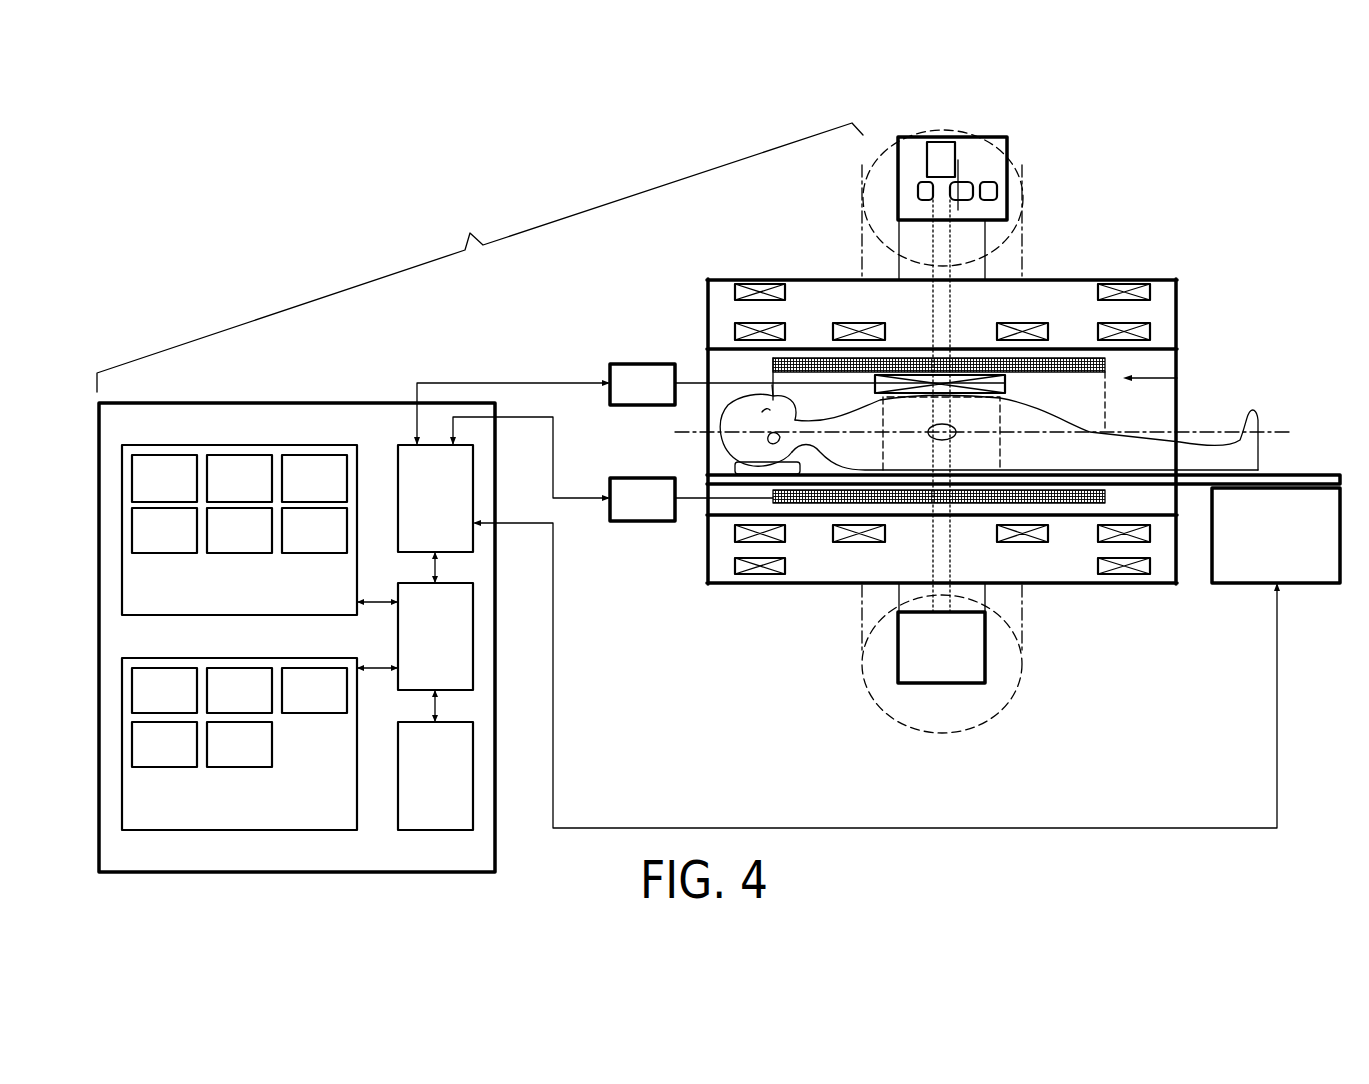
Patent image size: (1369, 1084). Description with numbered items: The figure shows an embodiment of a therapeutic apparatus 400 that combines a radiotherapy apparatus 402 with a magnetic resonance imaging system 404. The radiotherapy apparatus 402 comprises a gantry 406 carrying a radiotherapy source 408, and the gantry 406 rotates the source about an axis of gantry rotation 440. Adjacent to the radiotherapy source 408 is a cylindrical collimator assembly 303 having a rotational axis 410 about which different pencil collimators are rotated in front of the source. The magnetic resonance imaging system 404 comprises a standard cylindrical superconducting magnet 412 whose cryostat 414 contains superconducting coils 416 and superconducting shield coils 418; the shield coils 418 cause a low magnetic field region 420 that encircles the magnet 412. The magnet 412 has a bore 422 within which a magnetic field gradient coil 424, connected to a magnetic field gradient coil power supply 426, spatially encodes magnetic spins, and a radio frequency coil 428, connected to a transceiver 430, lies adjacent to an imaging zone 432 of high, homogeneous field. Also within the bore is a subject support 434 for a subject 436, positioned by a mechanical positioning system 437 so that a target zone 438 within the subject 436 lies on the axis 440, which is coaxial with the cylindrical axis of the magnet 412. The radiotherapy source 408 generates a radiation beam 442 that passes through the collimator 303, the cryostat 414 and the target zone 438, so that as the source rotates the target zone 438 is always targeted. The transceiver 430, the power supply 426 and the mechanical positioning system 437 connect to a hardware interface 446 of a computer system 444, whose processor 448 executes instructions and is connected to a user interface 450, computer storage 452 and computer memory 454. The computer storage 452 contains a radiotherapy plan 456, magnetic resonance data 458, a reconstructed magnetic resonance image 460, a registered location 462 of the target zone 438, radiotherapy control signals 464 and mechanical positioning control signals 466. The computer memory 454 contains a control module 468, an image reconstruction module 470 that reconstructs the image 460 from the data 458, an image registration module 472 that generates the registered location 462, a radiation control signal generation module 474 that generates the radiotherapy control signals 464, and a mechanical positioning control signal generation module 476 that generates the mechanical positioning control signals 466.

The cylindrical collimator assembly 303 is at (997, 190).
The therapeutic apparatus 400 is at (480, 257).
The radiotherapy apparatus 402 is at (850, 192).
The magnetic resonance imaging system 404 is at (706, 258).
The gantry 406 is at (987, 276).
The radiotherapy source 408 is at (927, 160).
The rotational axis of the collimator assembly 410 is at (958, 172).
The magnet 412 is at (1178, 315).
The cryostat 414 is at (1163, 297).
The superconducting coils 416 is at (735, 331).
The superconducting shield coils 418 is at (735, 290).
The low magnetic field region 420 is at (1022, 198).
The bore 422 is at (1177, 380).
The magnetic field gradient coil 424 is at (773, 360).
The magnetic field gradient coil power supply 426 is at (663, 515).
The radio frequency coil 428 is at (1006, 385).
The transceiver 430 is at (663, 400).
The imaging zone 432 is at (1035, 432).
The subject support 434 is at (707, 477).
The subject 436 is at (732, 421).
The mechanical positioning system 437 is at (1297, 548).
The target zone 438 is at (940, 440).
The axis of gantry rotation 440 is at (1268, 431).
The radiation beam 442 is at (855, 322).
The computer system 444 is at (300, 402).
The hardware interface 446 is at (456, 512).
The processor 448 is at (456, 653).
The user interface 450 is at (456, 791).
The computer storage 452 is at (256, 604).
The computer memory 454 is at (256, 818).
The radiotherapy plan 456 is at (185, 493).
The magnetic resonance data 458 is at (260, 493).
The magnetic resonance image 460 is at (335, 493).
The registered location 462 is at (185, 545).
The radiotherapy control signals 464 is at (260, 545).
The mechanical positioning control signals 466 is at (335, 545).
The control module 468 is at (185, 705).
The image reconstruction module 470 is at (260, 705).
The image registration module 472 is at (335, 705).
The radiation control signal generation module 474 is at (185, 759).
The mechanical positioning control signal generation module 476 is at (260, 759).